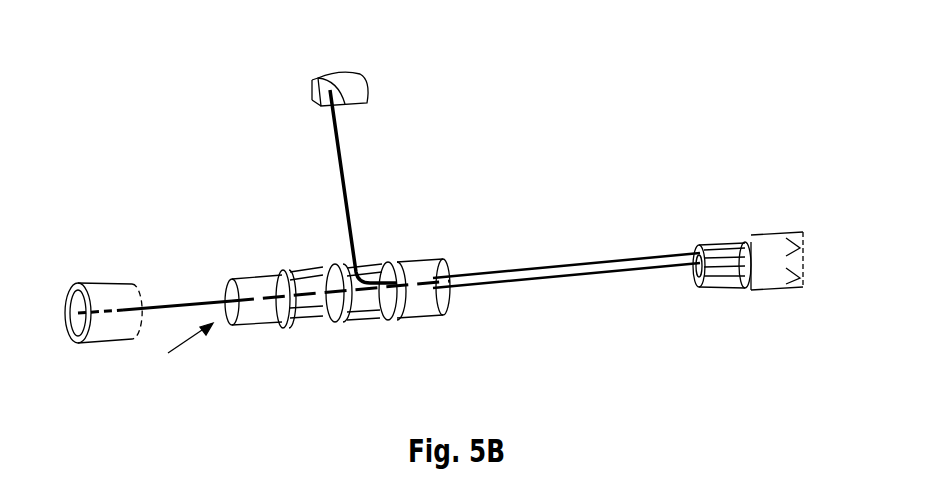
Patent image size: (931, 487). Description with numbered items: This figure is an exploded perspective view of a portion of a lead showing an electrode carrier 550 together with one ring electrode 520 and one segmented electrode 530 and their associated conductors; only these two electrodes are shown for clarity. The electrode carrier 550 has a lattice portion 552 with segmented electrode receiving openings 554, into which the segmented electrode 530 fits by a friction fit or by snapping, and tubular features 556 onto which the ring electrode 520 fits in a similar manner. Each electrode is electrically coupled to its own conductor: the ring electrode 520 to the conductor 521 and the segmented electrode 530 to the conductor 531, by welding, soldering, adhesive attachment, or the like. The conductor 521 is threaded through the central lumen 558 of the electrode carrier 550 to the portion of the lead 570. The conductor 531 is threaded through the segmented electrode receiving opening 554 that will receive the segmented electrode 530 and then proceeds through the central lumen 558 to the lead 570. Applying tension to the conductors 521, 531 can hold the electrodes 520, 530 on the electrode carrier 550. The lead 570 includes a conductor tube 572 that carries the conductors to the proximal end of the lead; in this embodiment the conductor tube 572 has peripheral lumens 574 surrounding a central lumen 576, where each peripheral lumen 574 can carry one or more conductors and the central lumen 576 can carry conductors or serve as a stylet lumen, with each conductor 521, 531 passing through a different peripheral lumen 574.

The ring electrode 520 is at (123, 308).
The conductor 521 is at (200, 302).
The segmented electrode 530 is at (320, 76).
The conductor 531 is at (345, 206).
The electrode carrier 550 is at (265, 273).
The lattice portion 552 is at (286, 322).
The segmented electrode receiving opening 554 is at (372, 262).
The tubular feature 556 is at (240, 320).
The central lumen 558 is at (175, 351).
The lead 570 is at (770, 236).
The conductor tube 572 is at (703, 246).
The peripheral lumen 574 is at (702, 281).
The central lumen 576 is at (690, 278).